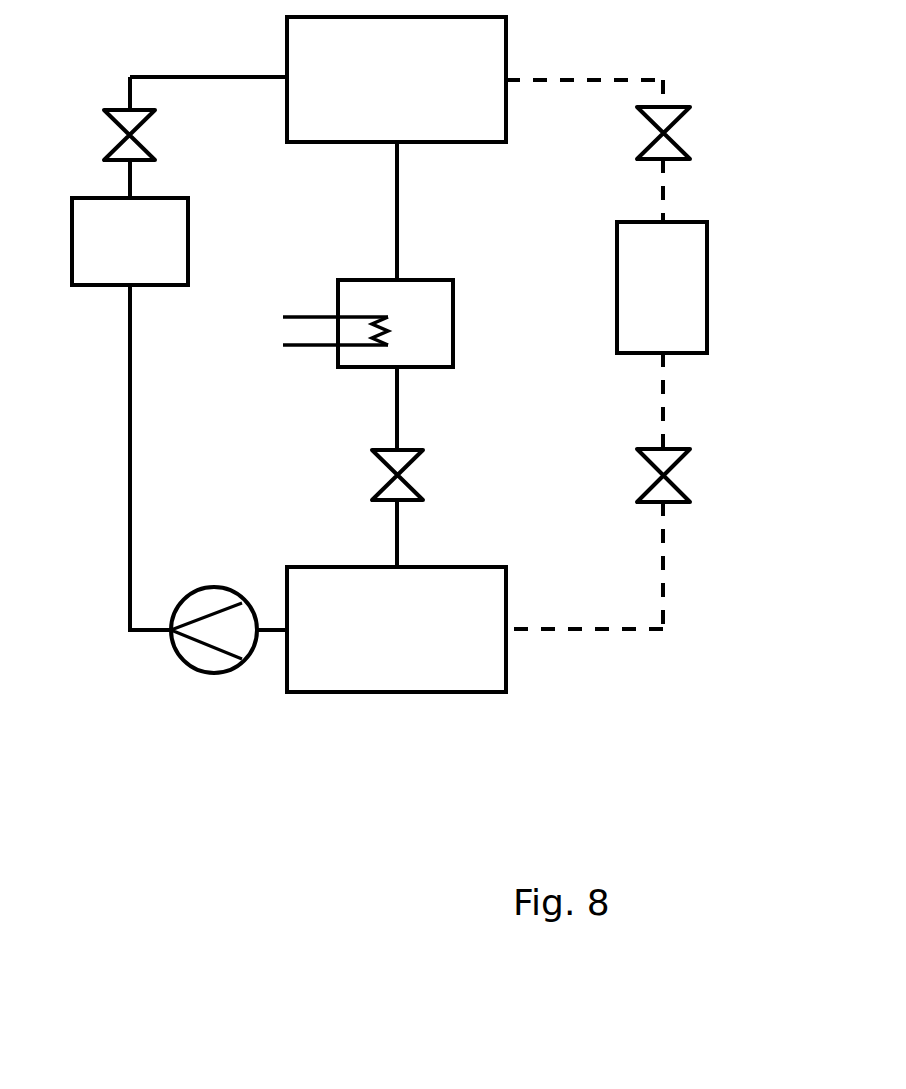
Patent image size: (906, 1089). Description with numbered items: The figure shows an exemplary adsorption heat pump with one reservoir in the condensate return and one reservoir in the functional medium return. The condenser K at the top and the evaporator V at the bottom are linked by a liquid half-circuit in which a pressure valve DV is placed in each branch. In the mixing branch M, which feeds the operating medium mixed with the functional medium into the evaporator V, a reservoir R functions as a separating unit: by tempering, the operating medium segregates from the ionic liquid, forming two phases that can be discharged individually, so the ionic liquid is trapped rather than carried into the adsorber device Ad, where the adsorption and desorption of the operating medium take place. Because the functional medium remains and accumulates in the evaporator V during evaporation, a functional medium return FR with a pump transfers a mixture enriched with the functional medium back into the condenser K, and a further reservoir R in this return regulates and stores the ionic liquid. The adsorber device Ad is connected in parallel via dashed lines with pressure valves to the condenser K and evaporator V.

The condenser K is at (396, 79).
The evaporator V is at (396, 629).
The reservoir R is at (197, 264).
The mixing branch M is at (393, 214).
The functional medium return FR is at (126, 386).
The pressure valve DV is at (104, 126).
The adsorber device Ad is at (697, 253).